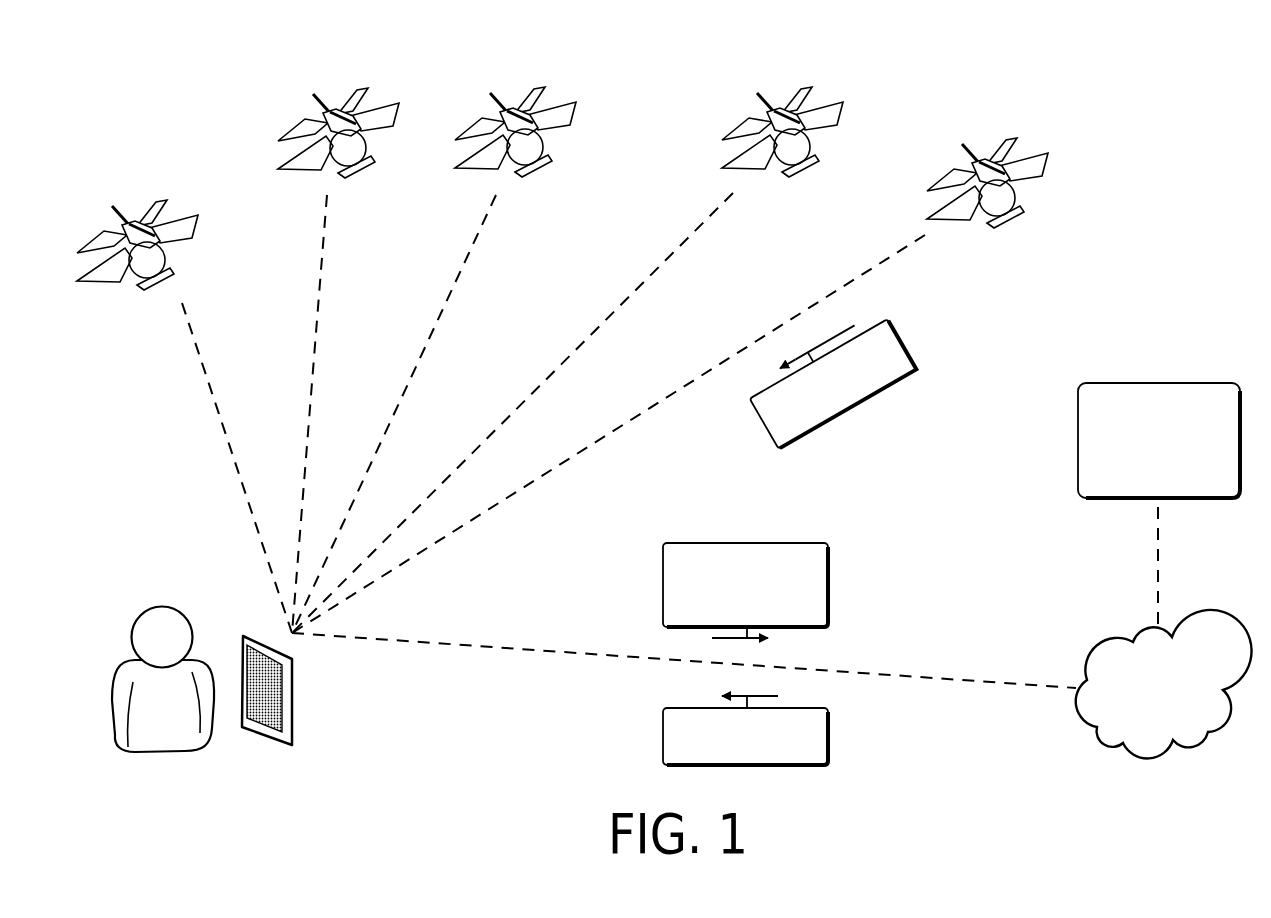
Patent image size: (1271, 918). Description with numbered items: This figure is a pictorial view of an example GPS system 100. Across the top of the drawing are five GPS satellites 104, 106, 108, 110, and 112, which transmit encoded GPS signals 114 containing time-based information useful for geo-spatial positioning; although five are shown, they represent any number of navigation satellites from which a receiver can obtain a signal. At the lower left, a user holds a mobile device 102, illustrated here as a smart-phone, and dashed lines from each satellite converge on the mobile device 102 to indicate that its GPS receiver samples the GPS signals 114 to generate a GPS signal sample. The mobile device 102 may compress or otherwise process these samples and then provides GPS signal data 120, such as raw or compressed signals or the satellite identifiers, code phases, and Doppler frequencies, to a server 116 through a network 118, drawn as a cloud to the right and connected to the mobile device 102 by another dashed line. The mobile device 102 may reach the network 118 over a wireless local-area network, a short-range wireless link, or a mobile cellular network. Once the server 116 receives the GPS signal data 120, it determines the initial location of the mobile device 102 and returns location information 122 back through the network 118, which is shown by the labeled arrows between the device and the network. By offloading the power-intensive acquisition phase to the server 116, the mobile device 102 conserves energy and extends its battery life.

The GPS system 100 is at (182, 78).
The mobile device 102 is at (297, 763).
The GPS satellite 104 is at (167, 197).
The GPS satellite 106 is at (372, 87).
The GPS satellite 108 is at (560, 87).
The GPS satellite 110 is at (827, 87).
The GPS satellite 112 is at (1032, 115).
The GPS signals 114 is at (830, 379).
The server 116 is at (1159, 440).
The network 118 is at (1164, 684).
The GPS signal data 120 is at (745, 590).
The location information 122 is at (745, 730).